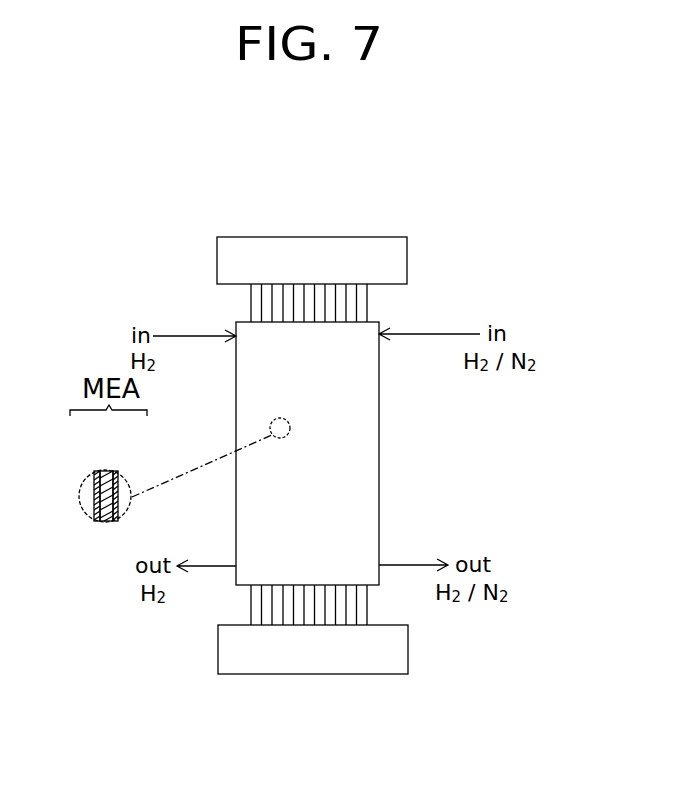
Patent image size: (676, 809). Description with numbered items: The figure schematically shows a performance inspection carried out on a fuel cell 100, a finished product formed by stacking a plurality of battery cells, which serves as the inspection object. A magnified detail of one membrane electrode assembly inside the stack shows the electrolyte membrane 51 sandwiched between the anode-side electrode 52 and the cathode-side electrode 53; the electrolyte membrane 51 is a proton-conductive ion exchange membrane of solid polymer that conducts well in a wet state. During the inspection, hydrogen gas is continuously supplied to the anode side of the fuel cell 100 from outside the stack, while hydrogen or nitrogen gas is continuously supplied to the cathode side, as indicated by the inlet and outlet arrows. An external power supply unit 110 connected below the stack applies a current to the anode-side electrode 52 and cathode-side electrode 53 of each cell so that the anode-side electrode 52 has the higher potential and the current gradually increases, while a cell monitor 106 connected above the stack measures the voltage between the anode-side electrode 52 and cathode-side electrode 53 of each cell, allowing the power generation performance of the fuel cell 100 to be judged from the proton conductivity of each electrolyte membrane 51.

The cell monitor 106 is at (303, 236).
The fuel cell 100 is at (379, 322).
The external power supply unit 110 is at (323, 674).
The electrolyte membrane 51 is at (106, 471).
The anode-side electrode 52 is at (94, 473).
The cathode-side electrode 53 is at (118, 473).